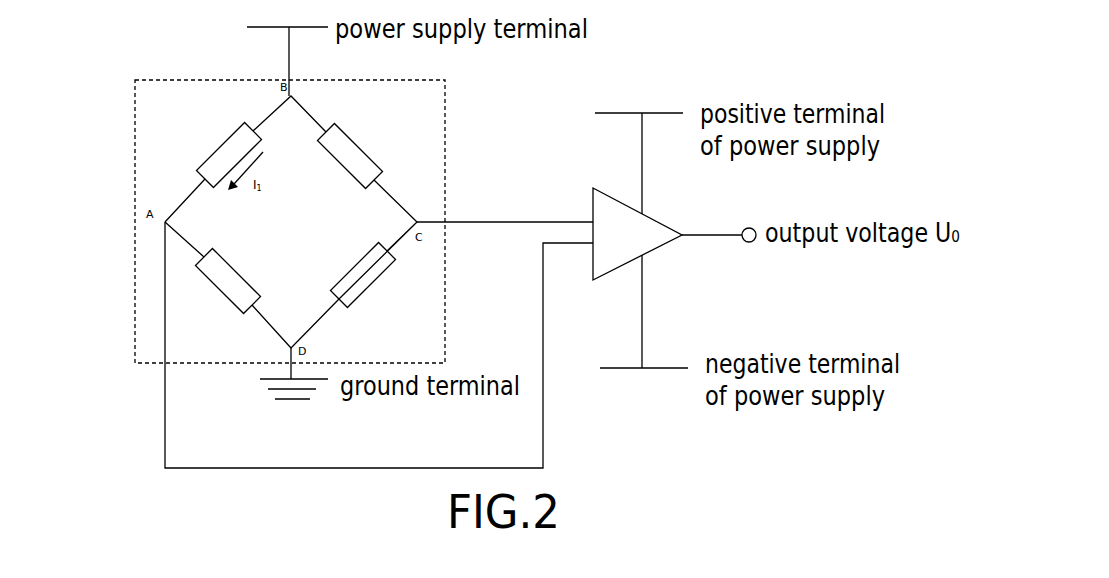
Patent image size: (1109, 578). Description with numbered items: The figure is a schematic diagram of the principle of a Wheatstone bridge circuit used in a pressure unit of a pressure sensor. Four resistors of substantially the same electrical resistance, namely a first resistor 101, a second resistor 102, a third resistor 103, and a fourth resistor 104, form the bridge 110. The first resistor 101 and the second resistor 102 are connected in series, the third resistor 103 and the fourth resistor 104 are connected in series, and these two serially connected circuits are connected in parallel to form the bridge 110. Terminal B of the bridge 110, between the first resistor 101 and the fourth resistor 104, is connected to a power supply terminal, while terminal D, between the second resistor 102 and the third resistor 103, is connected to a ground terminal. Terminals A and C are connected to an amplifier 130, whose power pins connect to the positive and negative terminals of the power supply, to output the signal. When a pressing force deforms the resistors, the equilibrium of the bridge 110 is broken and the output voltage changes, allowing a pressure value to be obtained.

The bridge 110 is at (135, 210).
The first resistor 101 is at (218, 145).
The second resistor 102 is at (212, 290).
The third resistor 103 is at (370, 289).
The fourth resistor 104 is at (388, 128).
The amplifier 130 is at (593, 188).